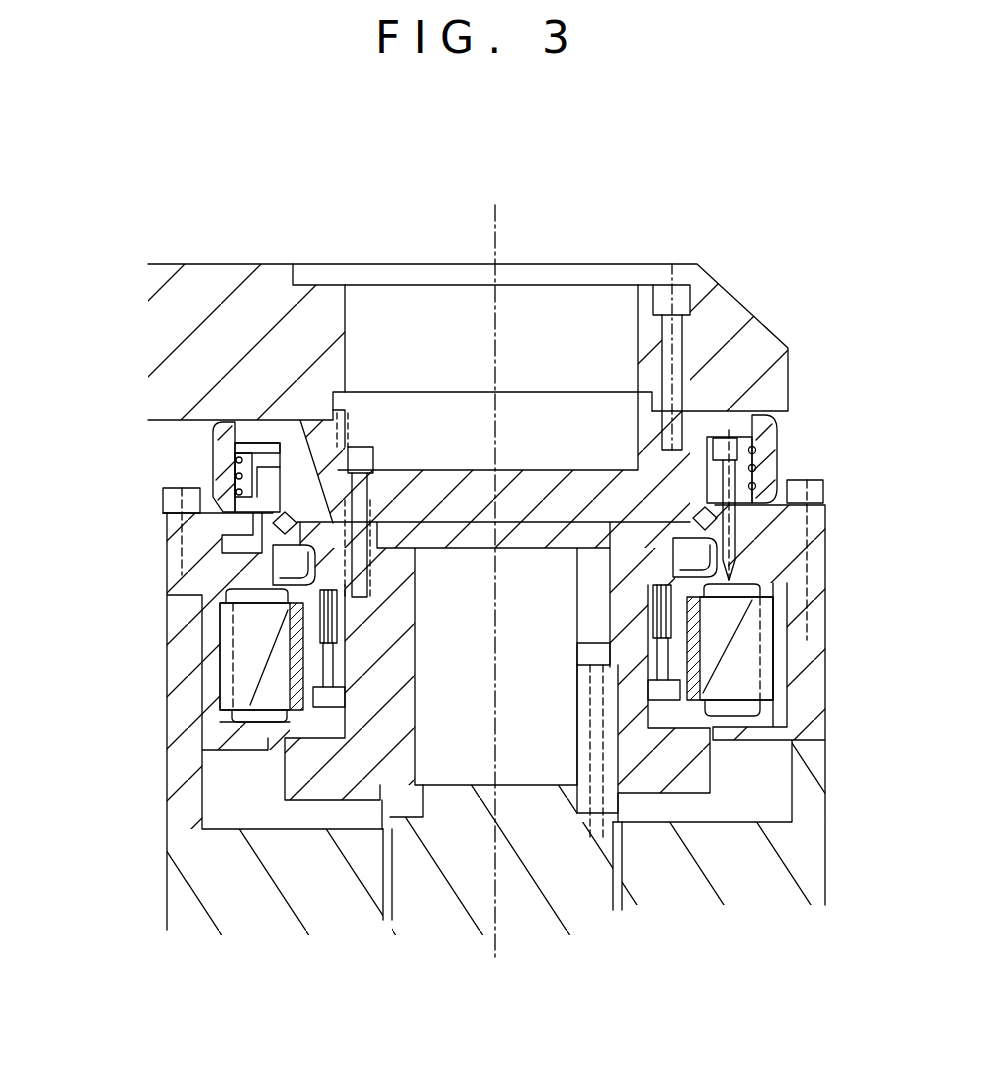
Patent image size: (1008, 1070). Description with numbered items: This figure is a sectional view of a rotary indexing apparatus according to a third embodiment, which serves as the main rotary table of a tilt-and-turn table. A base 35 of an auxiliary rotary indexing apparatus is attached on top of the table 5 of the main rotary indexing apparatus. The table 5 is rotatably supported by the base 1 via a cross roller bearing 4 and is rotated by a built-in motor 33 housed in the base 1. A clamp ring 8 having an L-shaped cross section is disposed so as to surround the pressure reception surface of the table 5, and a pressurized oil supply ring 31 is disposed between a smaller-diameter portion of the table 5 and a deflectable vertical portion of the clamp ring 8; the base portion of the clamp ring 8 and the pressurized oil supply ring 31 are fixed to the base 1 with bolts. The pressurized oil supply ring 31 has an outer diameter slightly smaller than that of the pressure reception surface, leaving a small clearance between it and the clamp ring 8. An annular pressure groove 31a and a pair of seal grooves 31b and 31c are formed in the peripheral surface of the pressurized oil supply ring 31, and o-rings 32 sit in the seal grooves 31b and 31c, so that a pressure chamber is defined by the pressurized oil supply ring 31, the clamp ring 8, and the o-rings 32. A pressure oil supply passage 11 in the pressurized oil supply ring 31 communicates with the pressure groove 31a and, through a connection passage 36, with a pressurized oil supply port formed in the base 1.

The base 1 is at (812, 878).
The cross roller bearing 4 is at (677, 558).
The table 5 is at (307, 443).
The clamp ring 8 is at (220, 458).
The pressure oil supply passage 11 is at (238, 430).
The pressurized oil supply ring 31 is at (758, 475).
The annular pressure groove 31a is at (257, 470).
The seal groove 31b is at (755, 443).
The seal groove 31c is at (822, 487).
The o-rings 32 is at (757, 453).
The motor 33 is at (752, 650).
The base 35 is at (733, 313).
The connection passage 36 is at (237, 528).